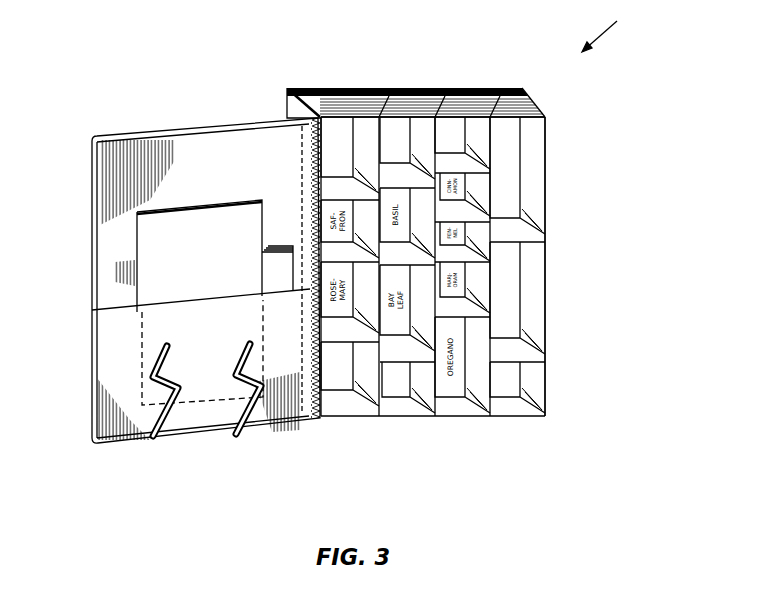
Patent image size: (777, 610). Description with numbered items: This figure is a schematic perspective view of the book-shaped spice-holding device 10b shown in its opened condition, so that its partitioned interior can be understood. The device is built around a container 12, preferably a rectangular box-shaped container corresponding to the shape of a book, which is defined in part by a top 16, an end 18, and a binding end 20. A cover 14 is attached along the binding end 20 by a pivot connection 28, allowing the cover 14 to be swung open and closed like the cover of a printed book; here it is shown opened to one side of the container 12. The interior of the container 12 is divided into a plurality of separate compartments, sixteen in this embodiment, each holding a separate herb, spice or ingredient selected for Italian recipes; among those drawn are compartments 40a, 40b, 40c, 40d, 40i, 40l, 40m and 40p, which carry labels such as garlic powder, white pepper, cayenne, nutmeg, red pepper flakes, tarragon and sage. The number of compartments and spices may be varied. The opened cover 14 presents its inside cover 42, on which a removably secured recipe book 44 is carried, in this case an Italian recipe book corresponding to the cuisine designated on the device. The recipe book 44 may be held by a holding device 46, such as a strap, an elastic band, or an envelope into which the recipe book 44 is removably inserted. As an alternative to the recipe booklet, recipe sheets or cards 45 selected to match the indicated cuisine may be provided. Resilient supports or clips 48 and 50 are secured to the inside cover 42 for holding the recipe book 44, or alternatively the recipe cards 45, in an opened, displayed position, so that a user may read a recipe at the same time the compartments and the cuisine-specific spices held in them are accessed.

The spice-holding device 10b is at (621, 31).
The container 12 is at (533, 110).
The cover 14 is at (92, 164).
The top 16 is at (450, 100).
The end 18 is at (545, 217).
The binding end 20 is at (291, 110).
The pivot connection 28 is at (322, 418).
The compartment 40a is at (518, 137).
The compartment 40b is at (518, 255).
The compartment 40c is at (513, 387).
The compartment 40d is at (457, 118).
The compartment 40i is at (400, 118).
The compartment 40l is at (400, 388).
The compartment 40m is at (340, 118).
The compartment 40p is at (338, 388).
The inside cover 42 is at (97, 193).
The recipe book 44 is at (137, 220).
The recipe sheets or cards 45 is at (278, 247).
The holding device 46 is at (103, 310).
The resilient support or clip 48 is at (155, 377).
The resilient support or clip 50 is at (233, 433).